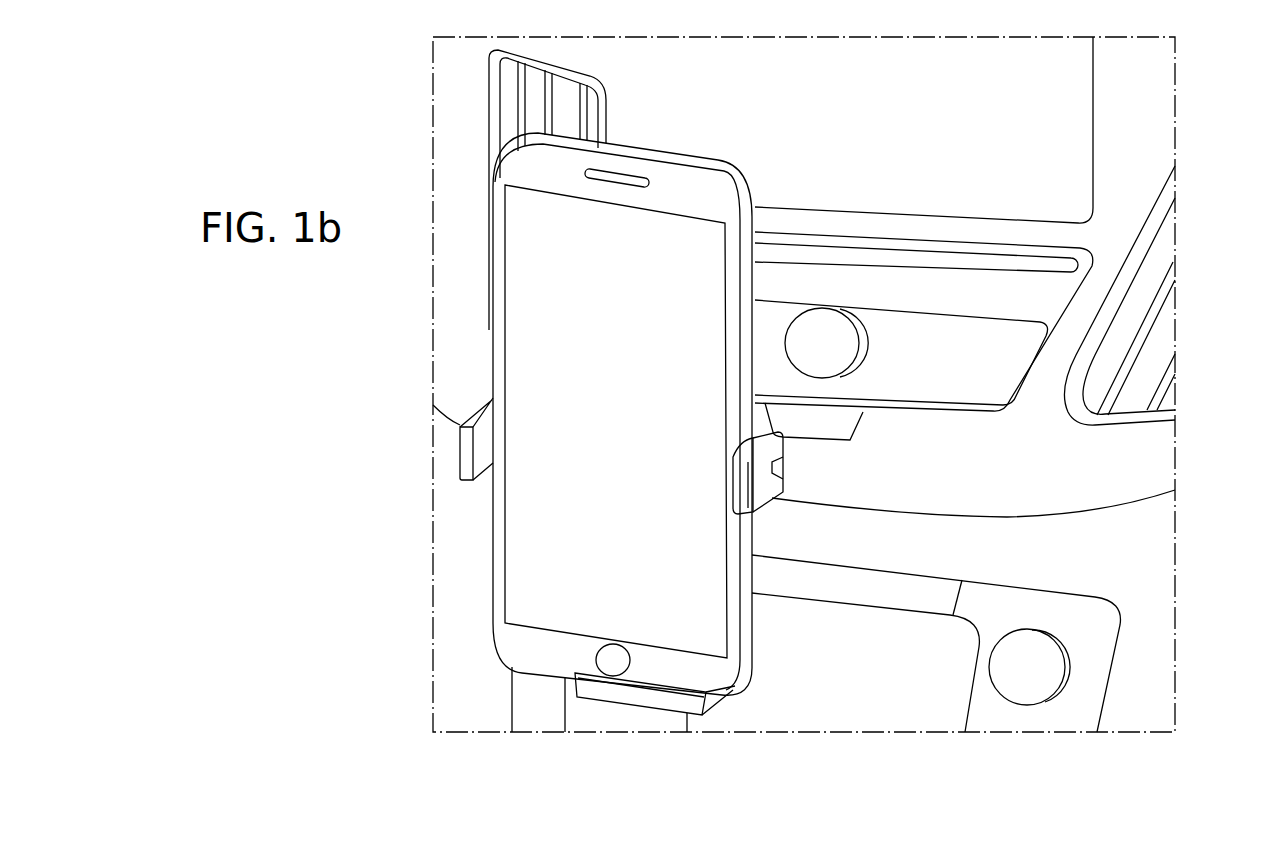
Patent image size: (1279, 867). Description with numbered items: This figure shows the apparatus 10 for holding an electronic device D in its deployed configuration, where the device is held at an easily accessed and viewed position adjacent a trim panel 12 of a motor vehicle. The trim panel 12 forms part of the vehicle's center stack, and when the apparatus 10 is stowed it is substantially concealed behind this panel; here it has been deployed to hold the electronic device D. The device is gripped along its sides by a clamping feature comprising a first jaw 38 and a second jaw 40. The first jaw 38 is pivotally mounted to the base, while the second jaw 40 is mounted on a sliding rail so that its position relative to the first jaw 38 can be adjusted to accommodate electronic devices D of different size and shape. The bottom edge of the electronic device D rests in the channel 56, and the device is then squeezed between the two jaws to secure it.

The apparatus 10 is at (600, 565).
The trim panel 12 is at (1097, 477).
The first jaw 38 is at (760, 482).
The second jaw 40 is at (463, 451).
The channel 56 is at (710, 688).
The electronic device D is at (535, 648).